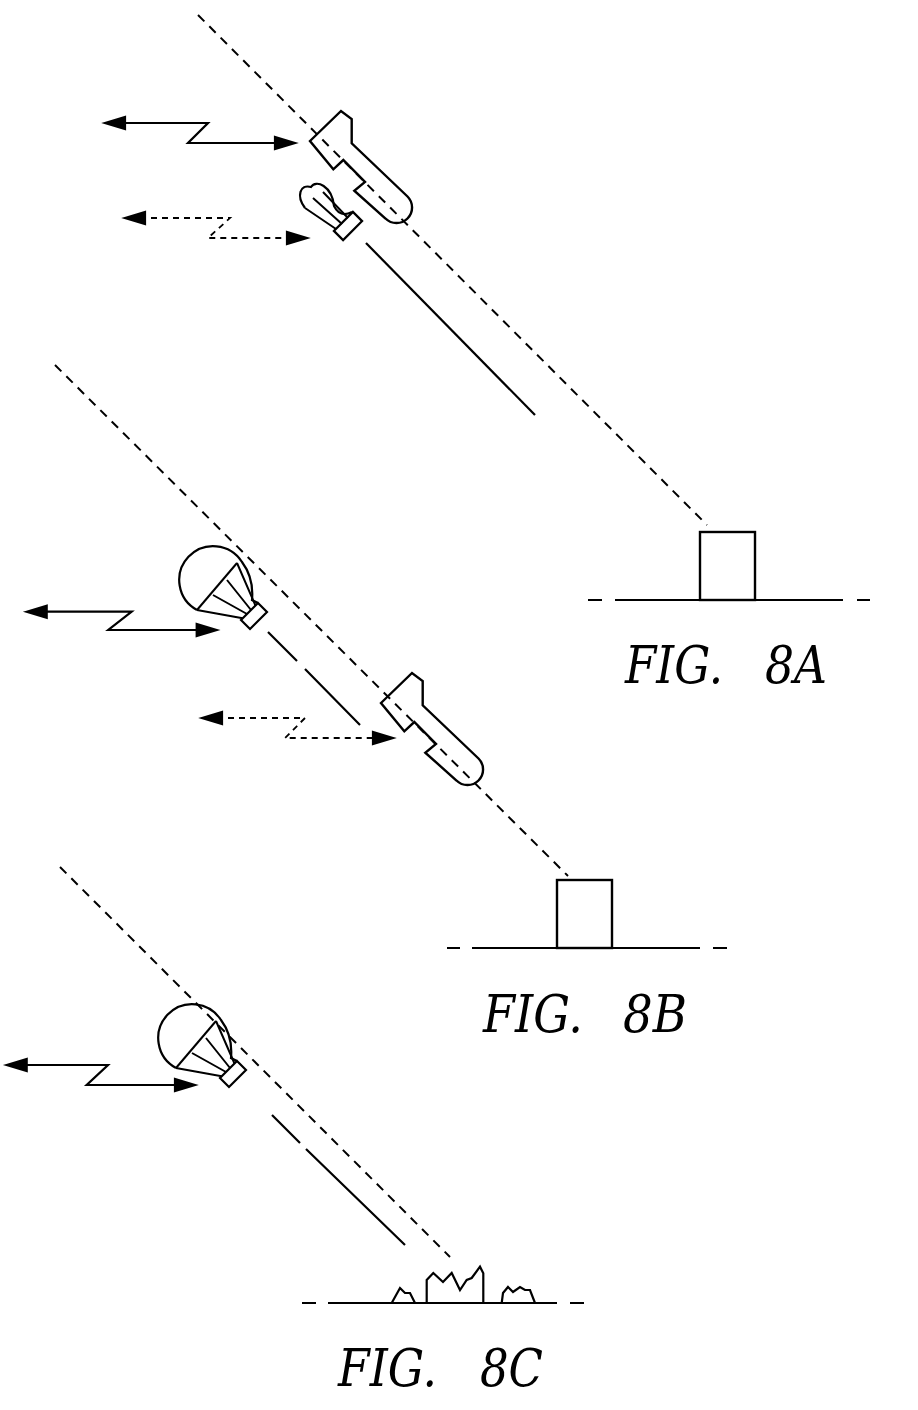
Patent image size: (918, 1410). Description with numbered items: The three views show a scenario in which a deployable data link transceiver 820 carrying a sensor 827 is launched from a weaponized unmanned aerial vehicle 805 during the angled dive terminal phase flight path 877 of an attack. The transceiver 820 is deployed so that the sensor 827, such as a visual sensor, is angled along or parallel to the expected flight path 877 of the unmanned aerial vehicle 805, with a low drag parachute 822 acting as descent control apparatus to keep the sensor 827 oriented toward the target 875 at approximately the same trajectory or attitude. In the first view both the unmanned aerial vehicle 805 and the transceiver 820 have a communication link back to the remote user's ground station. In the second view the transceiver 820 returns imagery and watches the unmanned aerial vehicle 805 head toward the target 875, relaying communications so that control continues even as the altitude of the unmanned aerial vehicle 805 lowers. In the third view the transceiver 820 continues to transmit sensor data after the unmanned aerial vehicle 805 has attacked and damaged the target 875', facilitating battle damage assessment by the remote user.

In FIG. 8A, the weaponized unmanned aerial vehicle 805 is at (401, 190).
In FIG. 8B, the weaponized unmanned aerial vehicle 805 is at (472, 753).
In FIG. 8A, the deployable data link transceiver 820 is at (338, 239).
In FIG. 8B, the deployable data link transceiver 820 is at (243, 633).
In FIG. 8C, the deployable data link transceiver 820 is at (220, 1087).
In FIG. 8A, the low drag parachute 822 is at (312, 189).
In FIG. 8B, the low drag parachute 822 is at (213, 556).
In FIG. 8C, the low drag parachute 822 is at (187, 1008).
In FIG. 8A, the sensor 827 is at (366, 241).
In FIG. 8B, the sensor 827 is at (262, 630).
In FIG. 8C, the sensor 827 is at (240, 1090).
In FIG. 8A, the angled dive terminal phase flight path 877 is at (482, 301).
In FIG. 8B, the angled dive terminal phase flight path 877 is at (278, 586).
In FIG. 8C, the angled dive terminal phase flight path 877 is at (133, 938).
In FIG. 8A, the target 875 is at (776, 566).
In FIG. 8B, the target 875 is at (633, 914).
In FIG. 8C, the damaged target 875' is at (463, 1249).